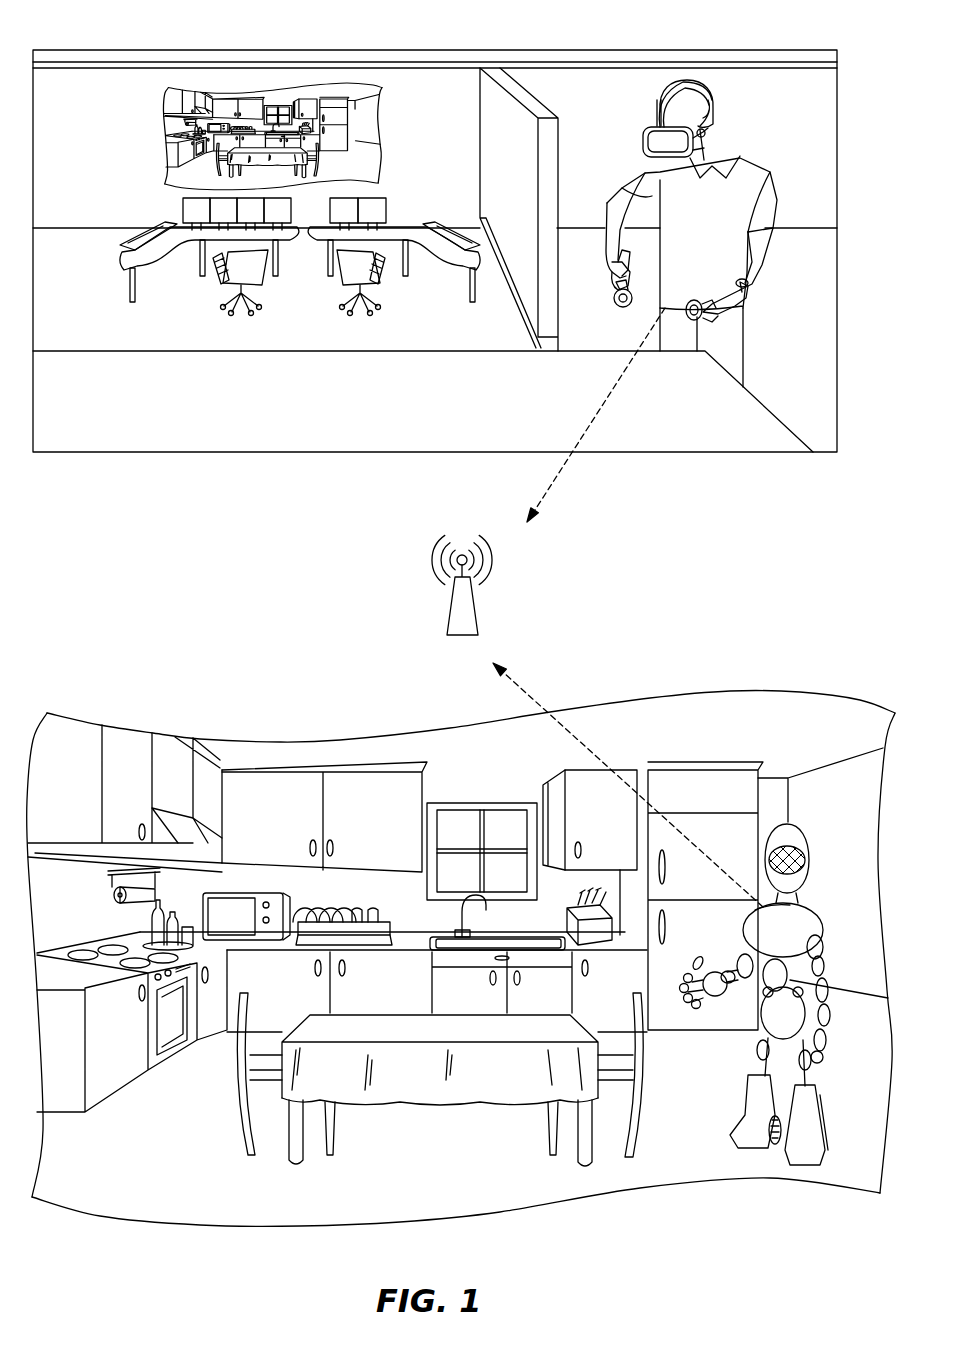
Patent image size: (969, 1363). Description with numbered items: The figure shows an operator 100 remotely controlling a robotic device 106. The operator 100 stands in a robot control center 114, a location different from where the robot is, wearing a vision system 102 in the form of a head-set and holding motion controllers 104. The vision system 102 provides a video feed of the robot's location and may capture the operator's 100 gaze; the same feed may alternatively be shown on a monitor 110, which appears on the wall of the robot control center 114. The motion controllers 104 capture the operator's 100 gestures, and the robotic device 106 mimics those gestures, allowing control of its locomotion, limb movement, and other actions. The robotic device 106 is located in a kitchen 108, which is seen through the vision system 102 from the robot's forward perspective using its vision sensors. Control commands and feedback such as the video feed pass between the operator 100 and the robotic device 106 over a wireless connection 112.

The operator 100 is at (742, 195).
The vision system 102 is at (698, 123).
The motion controllers 104 is at (613, 307).
The robotic device 106 is at (797, 918).
The kitchen 108 is at (607, 712).
The monitor 110 is at (252, 87).
The wireless connection 112 is at (466, 615).
The robot control center 114 is at (305, 331).